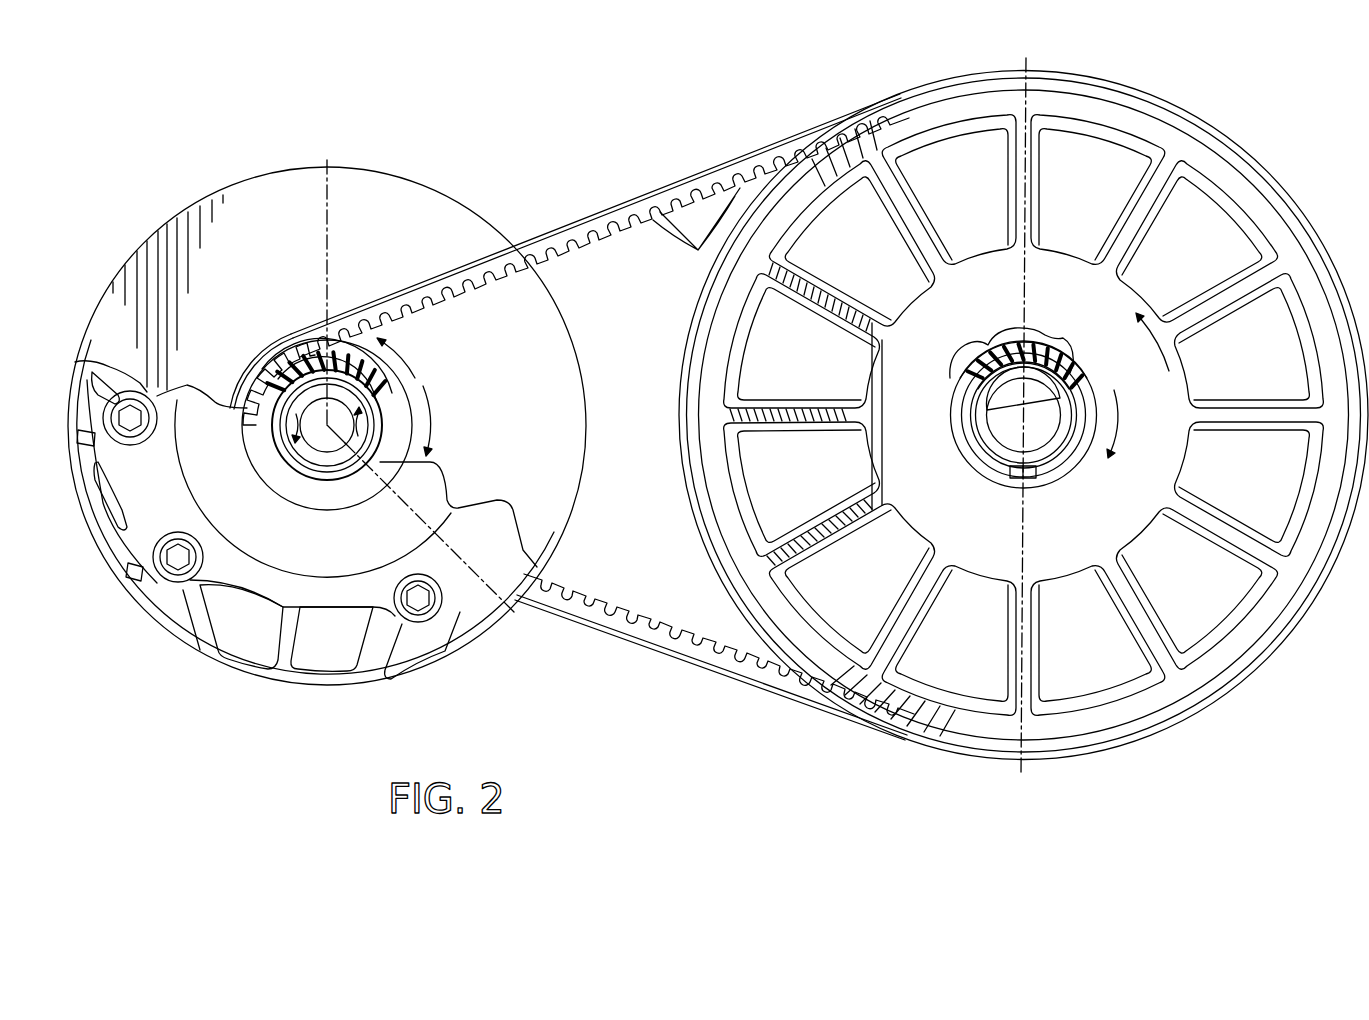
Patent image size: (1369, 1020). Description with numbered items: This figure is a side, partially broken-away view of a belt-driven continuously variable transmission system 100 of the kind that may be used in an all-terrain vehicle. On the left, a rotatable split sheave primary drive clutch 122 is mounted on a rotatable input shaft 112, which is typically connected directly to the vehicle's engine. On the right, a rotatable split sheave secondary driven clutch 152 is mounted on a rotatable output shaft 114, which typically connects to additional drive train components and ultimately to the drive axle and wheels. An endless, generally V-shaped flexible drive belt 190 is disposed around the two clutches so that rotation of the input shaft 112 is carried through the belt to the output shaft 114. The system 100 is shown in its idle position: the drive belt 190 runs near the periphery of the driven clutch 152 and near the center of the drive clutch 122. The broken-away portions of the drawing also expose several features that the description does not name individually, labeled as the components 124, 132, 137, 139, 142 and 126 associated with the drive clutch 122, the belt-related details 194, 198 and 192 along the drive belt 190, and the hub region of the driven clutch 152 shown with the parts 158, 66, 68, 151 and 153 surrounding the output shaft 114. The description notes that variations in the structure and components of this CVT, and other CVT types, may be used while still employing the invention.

The belt-driven continuously variable transmission system 100 is at (572, 148).
The split sheave primary drive clutch 122 is at (447, 190).
The driven sprocket 124 is at (553, 371).
The pawl 132 is at (297, 352).
The sprocket teeth 137 is at (257, 392).
The input shaft 112 is at (317, 462).
The cover plate 139 is at (110, 543).
The fastener 142 is at (165, 543).
The pulley spokes 126 is at (192, 653).
The drive belt 190 is at (673, 182).
The belt teeth 194 is at (745, 172).
The belt section 198 is at (696, 234).
The direction of belt travel 192 is at (628, 262).
The split sheave secondary driven clutch 152 is at (1105, 724).
The clutch housing 158 is at (963, 359).
The clutch pawl 66 is at (1004, 358).
The clutch ratchet 68 is at (1040, 355).
The output shaft 114 is at (993, 445).
The bearing 151 is at (1047, 470).
The bearing race 153 is at (1063, 463).